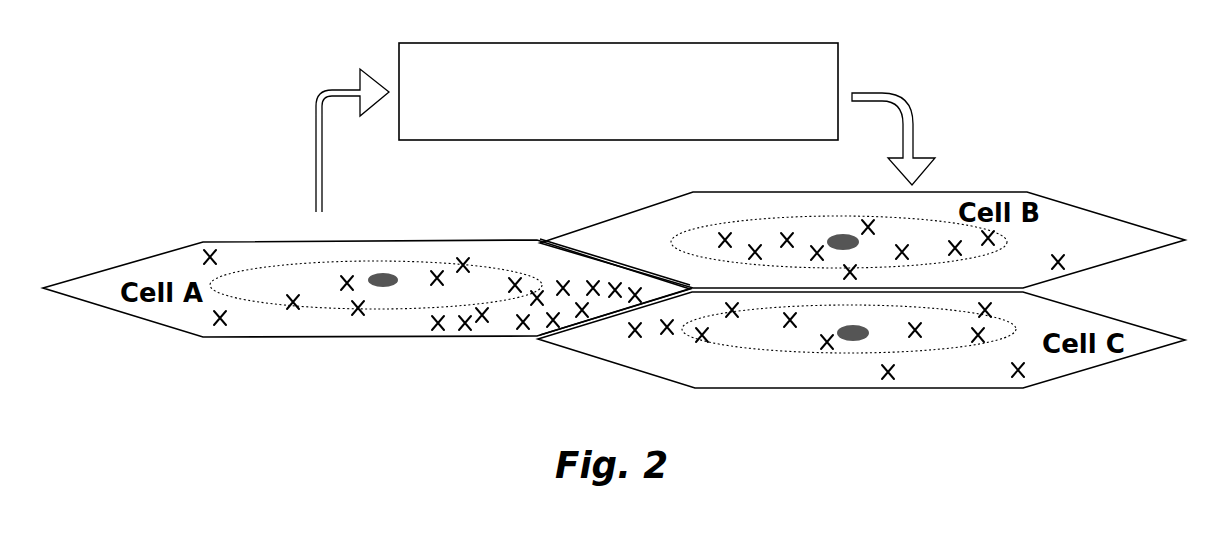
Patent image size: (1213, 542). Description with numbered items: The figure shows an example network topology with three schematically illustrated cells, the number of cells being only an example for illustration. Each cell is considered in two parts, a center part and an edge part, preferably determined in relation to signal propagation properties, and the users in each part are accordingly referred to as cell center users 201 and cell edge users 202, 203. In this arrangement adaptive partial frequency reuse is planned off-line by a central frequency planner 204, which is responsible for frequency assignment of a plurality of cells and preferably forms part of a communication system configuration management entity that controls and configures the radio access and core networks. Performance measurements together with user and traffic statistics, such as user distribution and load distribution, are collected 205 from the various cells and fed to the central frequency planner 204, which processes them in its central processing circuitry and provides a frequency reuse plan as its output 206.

The cell center users 201 is at (772, 330).
The cell edge users 202 is at (553, 275).
The cell edge users 203 is at (1030, 370).
The central frequency planner 204 is at (838, 55).
The collected performance measurements and statistics 205 is at (305, 142).
The frequency reuse plan output 206 is at (930, 140).